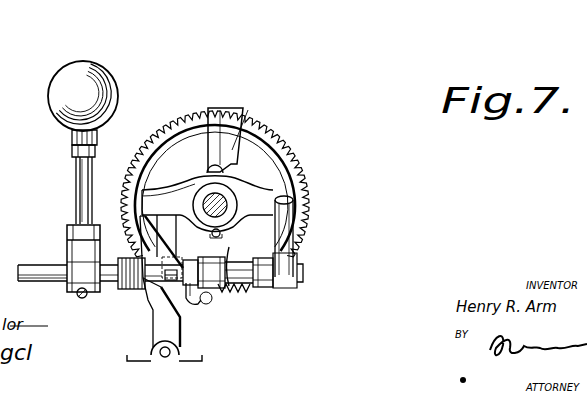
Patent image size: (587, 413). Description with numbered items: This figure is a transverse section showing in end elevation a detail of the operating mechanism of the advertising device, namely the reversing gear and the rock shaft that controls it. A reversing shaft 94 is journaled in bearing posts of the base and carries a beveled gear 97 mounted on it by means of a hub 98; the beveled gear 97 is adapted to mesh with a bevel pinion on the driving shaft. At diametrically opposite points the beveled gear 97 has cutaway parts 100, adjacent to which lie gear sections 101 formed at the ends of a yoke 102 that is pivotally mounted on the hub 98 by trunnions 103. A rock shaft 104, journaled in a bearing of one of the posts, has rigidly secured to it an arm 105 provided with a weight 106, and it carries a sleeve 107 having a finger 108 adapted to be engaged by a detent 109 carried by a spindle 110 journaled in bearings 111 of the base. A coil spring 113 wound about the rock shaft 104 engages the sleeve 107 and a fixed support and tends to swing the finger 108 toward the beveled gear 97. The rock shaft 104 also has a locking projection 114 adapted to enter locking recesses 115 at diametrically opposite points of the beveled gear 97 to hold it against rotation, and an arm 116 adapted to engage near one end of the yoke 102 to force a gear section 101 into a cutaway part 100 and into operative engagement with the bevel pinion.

The reversing shaft 94 is at (278, 159).
The beveled gear 97 is at (290, 171).
The hub 98 is at (208, 173).
The cutaway parts 100 is at (133, 170).
The gear sections 101 is at (137, 196).
The yoke 102 is at (230, 200).
The trunnions 103 is at (222, 170).
The rock shaft 104 is at (33, 270).
The arm 105 is at (82, 178).
The weight 106 is at (63, 76).
The sleeve 107 is at (180, 257).
The finger 108 is at (156, 300).
The detent 109 is at (152, 284).
The spindle 110 is at (165, 357).
The bearings 111 is at (148, 358).
The coil spring 113 is at (126, 258).
The locking projection 114 is at (238, 291).
The locking recesses 115 is at (228, 108).
The arm 116 is at (296, 232).